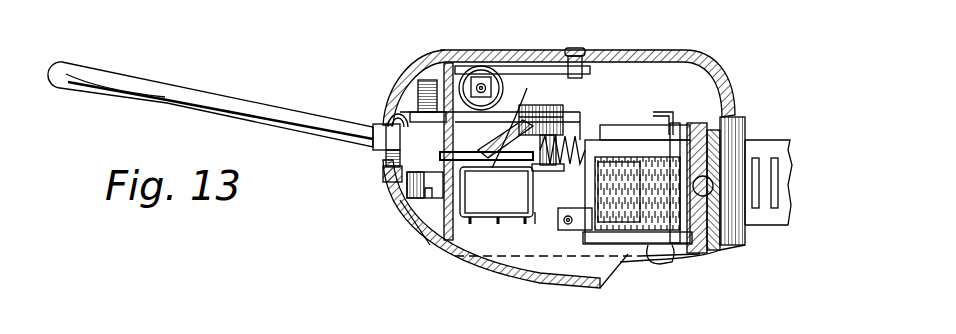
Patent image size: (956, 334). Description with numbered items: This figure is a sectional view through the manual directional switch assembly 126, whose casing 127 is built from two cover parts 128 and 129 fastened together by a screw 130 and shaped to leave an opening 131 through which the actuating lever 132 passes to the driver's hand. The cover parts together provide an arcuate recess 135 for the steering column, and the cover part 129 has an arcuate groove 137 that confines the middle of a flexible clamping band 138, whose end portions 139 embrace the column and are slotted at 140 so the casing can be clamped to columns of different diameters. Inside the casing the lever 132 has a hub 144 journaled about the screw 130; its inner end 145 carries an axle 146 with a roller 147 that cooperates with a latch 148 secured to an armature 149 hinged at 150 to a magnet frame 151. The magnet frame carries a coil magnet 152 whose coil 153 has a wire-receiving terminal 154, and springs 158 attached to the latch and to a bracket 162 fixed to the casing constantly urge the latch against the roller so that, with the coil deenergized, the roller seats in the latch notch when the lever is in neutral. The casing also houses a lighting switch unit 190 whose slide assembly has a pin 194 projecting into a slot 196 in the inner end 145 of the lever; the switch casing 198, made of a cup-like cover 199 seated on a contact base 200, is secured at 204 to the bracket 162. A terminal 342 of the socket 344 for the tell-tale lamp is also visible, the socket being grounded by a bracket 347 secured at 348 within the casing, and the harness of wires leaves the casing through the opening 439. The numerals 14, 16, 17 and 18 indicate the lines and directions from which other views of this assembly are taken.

The view direction indicator 14 is at (66, 77).
The section line 16- 16 is at (549, 93).
The section line 17- 17 is at (549, 31).
The section line 18- 18 is at (455, 48).
The manual directional switch assembly 126 is at (383, 90).
The casing 127 is at (435, 54).
The cover part 128 is at (420, 66).
The cover part 129 is at (397, 200).
The screw 130 is at (408, 202).
The opening 131 is at (390, 112).
The actuating lever 132 is at (120, 66).
The arcuate recess 135 is at (733, 150).
The arcuate groove 137 is at (715, 250).
The clamping band 138 is at (780, 137).
The end portions 139 is at (787, 220).
The slots 140 is at (757, 195).
The hub 144 is at (385, 158).
The inner end 145 is at (529, 122).
The axle 146 is at (552, 112).
The roller 147 is at (540, 135).
The latch 148 is at (548, 152).
The armature 149 is at (582, 210).
The hinge 150 is at (565, 228).
The magnet frame 151 is at (637, 241).
The coil magnet 152 is at (636, 150).
The coil 153 is at (644, 252).
The wire-receiving terminal 154 is at (658, 112).
The springs 158 is at (577, 182).
The bracket 162 is at (386, 173).
The lighting switch unit 190 is at (450, 243).
The pin 194 is at (496, 192).
The slot 196 is at (512, 128).
The casing 198 is at (538, 218).
The cup-like cover 199 is at (533, 192).
The contact base 200 is at (496, 192).
The securing point 204 is at (505, 212).
The terminal 342 is at (481, 78).
The socket 344 is at (498, 76).
The bracket 347 is at (590, 70).
The securing point 348 is at (586, 53).
The opening 439 is at (612, 272).